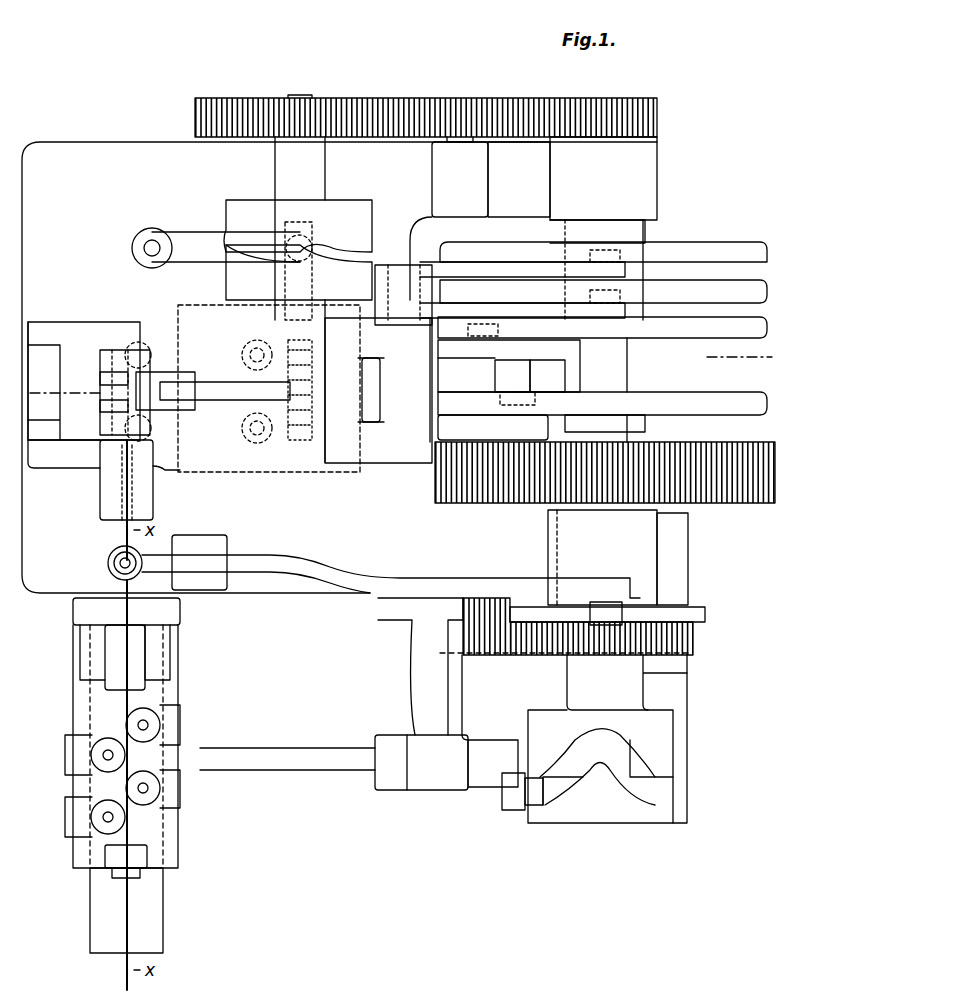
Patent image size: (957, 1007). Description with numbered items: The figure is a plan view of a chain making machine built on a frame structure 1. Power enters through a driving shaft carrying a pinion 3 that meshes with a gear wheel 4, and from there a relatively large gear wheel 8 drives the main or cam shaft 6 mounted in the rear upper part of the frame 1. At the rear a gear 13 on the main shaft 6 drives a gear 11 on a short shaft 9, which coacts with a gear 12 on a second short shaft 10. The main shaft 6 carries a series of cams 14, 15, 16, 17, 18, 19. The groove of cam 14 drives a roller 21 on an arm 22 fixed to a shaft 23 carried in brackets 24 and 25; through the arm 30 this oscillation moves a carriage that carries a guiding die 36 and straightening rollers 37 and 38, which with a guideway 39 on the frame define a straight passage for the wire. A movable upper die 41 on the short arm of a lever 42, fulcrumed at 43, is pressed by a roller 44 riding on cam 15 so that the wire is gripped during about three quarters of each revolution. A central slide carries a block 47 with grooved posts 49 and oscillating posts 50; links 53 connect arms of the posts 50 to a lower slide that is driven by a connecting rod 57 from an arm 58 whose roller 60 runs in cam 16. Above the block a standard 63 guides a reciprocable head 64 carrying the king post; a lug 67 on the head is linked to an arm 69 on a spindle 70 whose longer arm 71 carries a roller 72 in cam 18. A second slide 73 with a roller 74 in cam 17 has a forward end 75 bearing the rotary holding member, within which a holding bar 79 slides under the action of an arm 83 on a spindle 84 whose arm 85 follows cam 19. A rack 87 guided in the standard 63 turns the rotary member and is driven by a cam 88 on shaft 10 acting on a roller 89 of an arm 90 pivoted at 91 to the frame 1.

The frame structure 1 is at (88, 146).
The pinion 3 is at (408, 375).
The gear wheel 4 is at (693, 640).
The main or cam shaft 6 is at (625, 350).
The gear wheel 8 is at (775, 472).
The shaft 9 is at (443, 142).
The shaft 10 is at (300, 98).
The gear 11 is at (452, 98).
The gear 12 is at (205, 98).
The gear 13 is at (608, 98).
The cam 14 is at (665, 740).
The cam 15 is at (705, 607).
The cam 16 is at (760, 400).
The cam 17 is at (760, 328).
The cam 18 is at (760, 291).
The cam 19 is at (740, 244).
The roller 21 is at (565, 790).
The arm 22 is at (502, 760).
The shaft 23 is at (282, 765).
The bracket 24 is at (412, 673).
The bracket 25 is at (155, 892).
The arm 30 is at (120, 641).
The guiding die 36 is at (115, 858).
The straightening rollers 37 is at (108, 755).
The straightening rollers 38 is at (150, 725).
The guideway 39 is at (108, 498).
The movable upper die 41 is at (108, 560).
The lever 42 is at (275, 555).
The fulcrum 43 is at (198, 538).
The roller 44 is at (610, 616).
The block 47 is at (62, 357).
The grooved rollers or posts 49 is at (158, 372).
The posts 50 is at (100, 375).
The link 53 is at (180, 312).
The connecting rod 57 is at (505, 385).
The arm 58 is at (553, 380).
The roller 60 is at (520, 410).
The standard 63 is at (80, 428).
The reciprocable head 64 is at (128, 352).
The lug 67 is at (248, 412).
The arm 69 is at (232, 385).
The spindle 70 is at (315, 455).
The arm 71 is at (527, 318).
The roller 72 is at (620, 292).
The second slide 73 is at (505, 352).
The roller 74 is at (469, 328).
The forward end 75 is at (330, 380).
The holding bar 79 is at (330, 398).
The arm 83 is at (430, 378).
The spindle 84 is at (405, 265).
The arm 85 is at (470, 265).
The rack 87 is at (290, 212).
The cam 88 is at (240, 283).
The roller 89 is at (312, 255).
The arm 90 is at (205, 235).
The pivot 91 is at (152, 248).